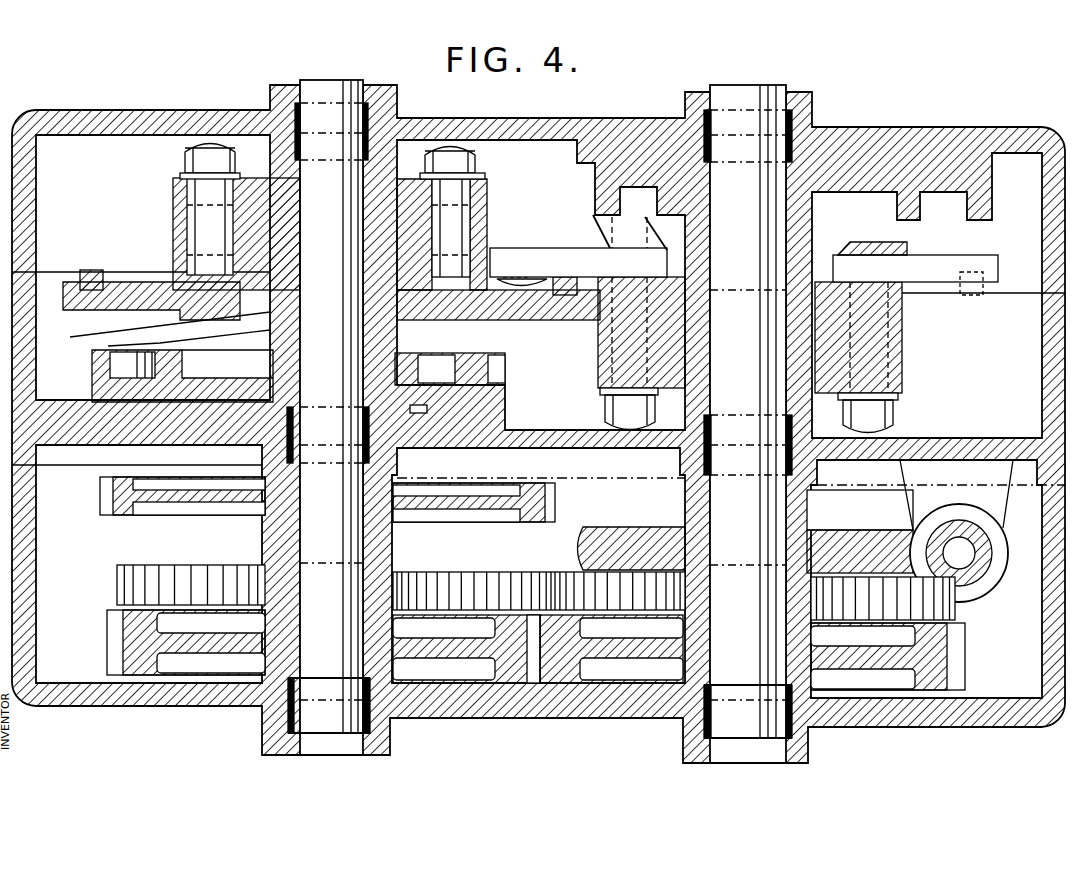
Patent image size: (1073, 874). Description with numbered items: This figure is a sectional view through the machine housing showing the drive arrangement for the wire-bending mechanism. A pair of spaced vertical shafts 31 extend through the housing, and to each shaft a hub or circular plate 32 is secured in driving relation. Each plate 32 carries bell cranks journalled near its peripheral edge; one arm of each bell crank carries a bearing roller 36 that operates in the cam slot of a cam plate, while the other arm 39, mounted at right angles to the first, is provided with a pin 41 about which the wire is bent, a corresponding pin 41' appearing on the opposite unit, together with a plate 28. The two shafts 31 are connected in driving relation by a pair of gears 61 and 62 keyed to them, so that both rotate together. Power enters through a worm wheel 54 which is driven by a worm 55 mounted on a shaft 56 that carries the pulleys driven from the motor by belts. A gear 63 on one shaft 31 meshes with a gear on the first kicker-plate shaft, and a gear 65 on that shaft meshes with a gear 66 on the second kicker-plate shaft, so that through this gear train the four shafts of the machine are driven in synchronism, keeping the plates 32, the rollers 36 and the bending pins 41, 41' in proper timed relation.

The vertical shaft 31 is at (336, 85).
The hub or circular plate 32 is at (178, 205).
The arm 39 is at (130, 308).
The pin 41 is at (350, 261).
The locking screw 41' is at (915, 287).
The adjusting plate 28 is at (535, 281).
The bearing roller 36 is at (110, 364).
The gear 63 is at (130, 505).
The gear 65 is at (115, 585).
The gear 66 is at (545, 575).
The gear 62 is at (512, 683).
The gear 61 is at (575, 683).
The worm wheel 54 is at (833, 535).
The worm 55 is at (996, 565).
The shaft 56 is at (955, 600).